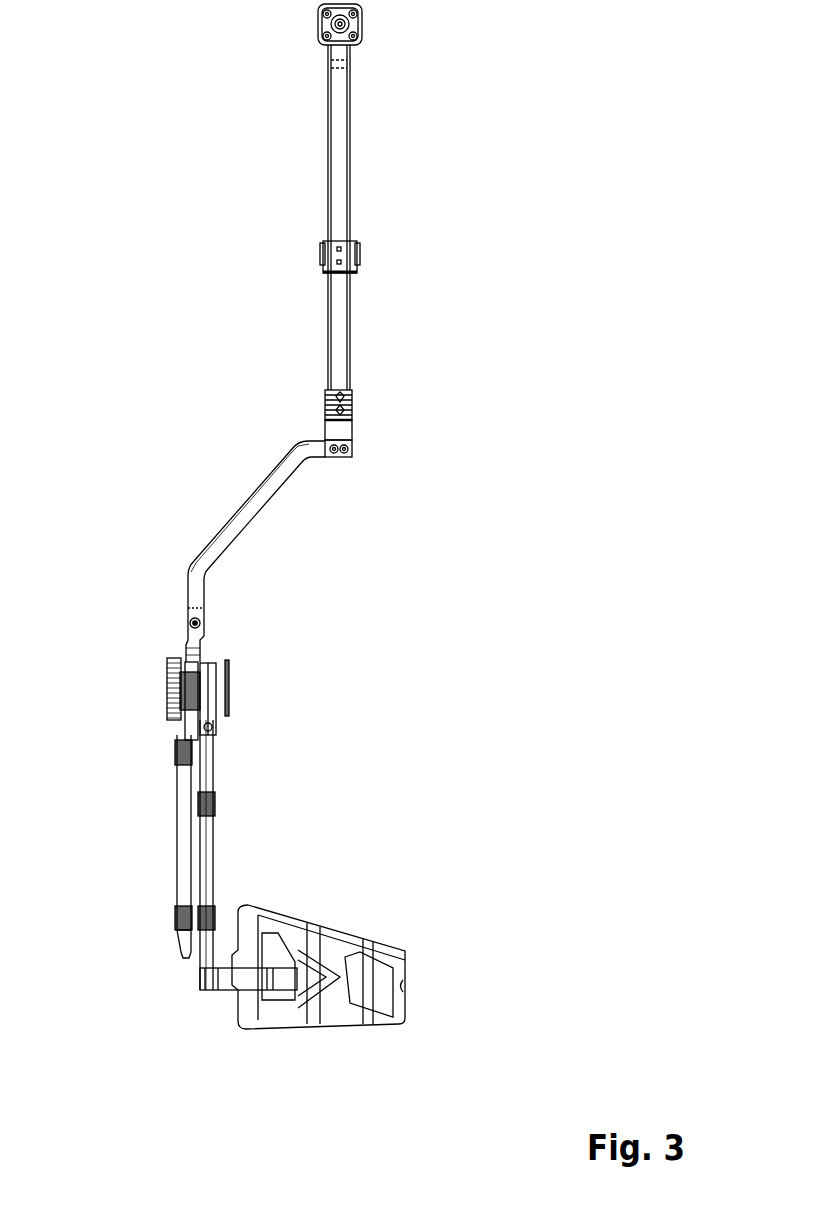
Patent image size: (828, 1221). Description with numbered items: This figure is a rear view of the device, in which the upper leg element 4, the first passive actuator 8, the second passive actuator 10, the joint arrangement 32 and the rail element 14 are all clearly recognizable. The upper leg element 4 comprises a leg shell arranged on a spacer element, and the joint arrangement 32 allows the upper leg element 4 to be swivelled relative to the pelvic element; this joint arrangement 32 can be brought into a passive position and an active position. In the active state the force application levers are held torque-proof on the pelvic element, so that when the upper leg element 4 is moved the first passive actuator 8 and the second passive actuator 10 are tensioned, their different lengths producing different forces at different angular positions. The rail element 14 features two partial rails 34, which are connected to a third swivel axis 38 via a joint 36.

The upper leg element 4 is at (318, 911).
The first passive actuator 8 is at (185, 780).
The second passive actuator 10 is at (207, 868).
The rail element 14 is at (383, 380).
The joint arrangement 32 is at (242, 690).
The partial rails 34 is at (263, 483).
The joint 36 is at (190, 630).
The third swivel axis 38 is at (203, 621).